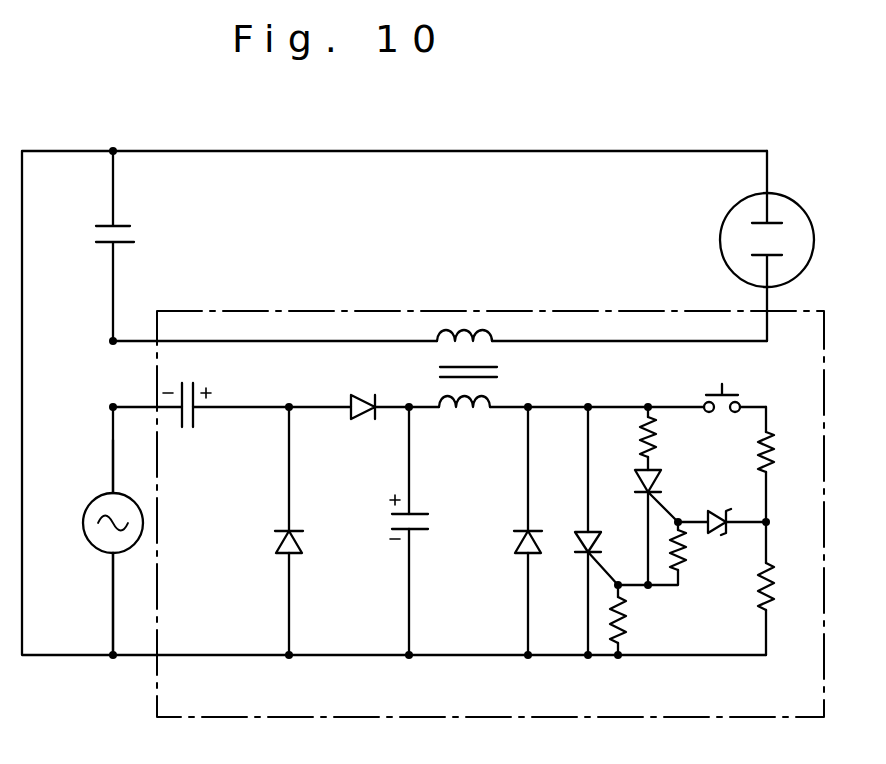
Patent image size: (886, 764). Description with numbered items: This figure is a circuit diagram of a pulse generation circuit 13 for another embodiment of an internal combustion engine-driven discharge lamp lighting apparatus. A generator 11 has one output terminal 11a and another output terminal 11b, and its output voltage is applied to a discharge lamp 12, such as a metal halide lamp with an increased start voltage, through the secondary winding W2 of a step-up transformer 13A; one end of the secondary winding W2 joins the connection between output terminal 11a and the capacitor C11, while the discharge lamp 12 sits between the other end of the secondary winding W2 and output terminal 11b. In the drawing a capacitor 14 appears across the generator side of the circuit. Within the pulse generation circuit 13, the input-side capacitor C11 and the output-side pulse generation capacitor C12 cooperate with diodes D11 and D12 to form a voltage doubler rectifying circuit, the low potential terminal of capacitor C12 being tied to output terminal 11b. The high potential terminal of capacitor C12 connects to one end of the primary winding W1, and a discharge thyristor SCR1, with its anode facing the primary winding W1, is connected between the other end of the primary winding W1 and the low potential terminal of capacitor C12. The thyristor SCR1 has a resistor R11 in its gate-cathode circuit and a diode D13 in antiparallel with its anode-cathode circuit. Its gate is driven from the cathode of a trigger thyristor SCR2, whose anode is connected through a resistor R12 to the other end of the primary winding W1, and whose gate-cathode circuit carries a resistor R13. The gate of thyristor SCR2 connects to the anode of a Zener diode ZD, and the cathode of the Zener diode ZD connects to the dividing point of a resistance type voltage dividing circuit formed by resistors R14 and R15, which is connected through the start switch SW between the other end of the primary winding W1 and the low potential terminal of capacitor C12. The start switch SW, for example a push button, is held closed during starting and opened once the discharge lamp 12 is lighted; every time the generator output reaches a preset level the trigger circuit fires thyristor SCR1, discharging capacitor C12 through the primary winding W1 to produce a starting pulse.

The generator 11 is at (84, 537).
The output terminal 11a is at (112, 466).
The output terminal 11b is at (113, 606).
The discharge lamp 12 is at (803, 209).
The pulse generation circuit 13 is at (802, 308).
The step-up transformer 13A is at (498, 377).
The main capacitor 14 is at (134, 234).
The primary winding W1 is at (463, 410).
The secondary winding W2 is at (465, 338).
The capacitor C11 is at (190, 430).
The pulse generation capacitor C12 is at (430, 518).
The diode D11 is at (302, 543).
The diode D12 is at (362, 420).
The diode D13 is at (517, 548).
The resistor R11 is at (626, 620).
The resistor R12 is at (638, 442).
The resistor R13 is at (683, 547).
The resistor R14 is at (797, 445).
The resistor R15 is at (773, 585).
The thyristor SCR1 is at (584, 556).
The trigger thyristor SCR2 is at (655, 486).
The Zener diode ZD is at (718, 508).
The start switch SW is at (732, 392).